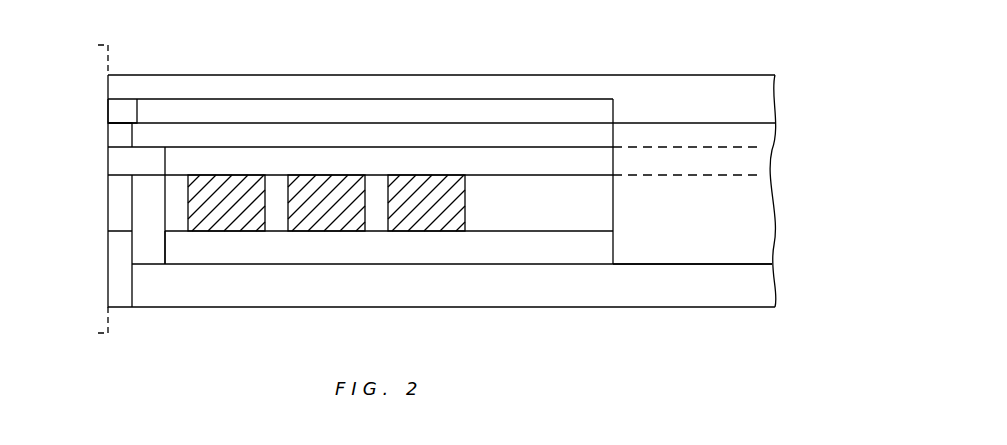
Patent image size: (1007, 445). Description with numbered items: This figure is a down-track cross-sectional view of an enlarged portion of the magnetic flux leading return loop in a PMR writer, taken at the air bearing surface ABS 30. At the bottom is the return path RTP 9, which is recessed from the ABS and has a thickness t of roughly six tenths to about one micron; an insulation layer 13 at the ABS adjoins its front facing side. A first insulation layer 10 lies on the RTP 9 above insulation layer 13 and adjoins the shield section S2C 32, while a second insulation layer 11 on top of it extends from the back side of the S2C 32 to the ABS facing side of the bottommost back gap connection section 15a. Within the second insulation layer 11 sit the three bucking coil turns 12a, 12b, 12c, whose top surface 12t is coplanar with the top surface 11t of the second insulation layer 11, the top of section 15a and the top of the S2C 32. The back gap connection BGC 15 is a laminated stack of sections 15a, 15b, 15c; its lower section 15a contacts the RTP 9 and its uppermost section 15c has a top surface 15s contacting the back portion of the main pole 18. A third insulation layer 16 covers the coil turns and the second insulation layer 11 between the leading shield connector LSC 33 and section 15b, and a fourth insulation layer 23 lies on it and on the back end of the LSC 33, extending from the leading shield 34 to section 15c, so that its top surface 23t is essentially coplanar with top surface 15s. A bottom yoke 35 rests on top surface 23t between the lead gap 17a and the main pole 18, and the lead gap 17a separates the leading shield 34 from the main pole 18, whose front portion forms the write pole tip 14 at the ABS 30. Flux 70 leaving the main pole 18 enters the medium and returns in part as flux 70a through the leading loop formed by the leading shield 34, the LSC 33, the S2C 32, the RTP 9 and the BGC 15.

The return path (RTP) 9 is at (764, 287).
The first insulation layer 10 is at (118, 246).
The second insulation layer 11 is at (120, 202).
The top surface of second insulation layer 11t is at (490, 176).
The bucking coil turn 12a is at (205, 220).
The bucking coil turn 12b is at (305, 222).
The bucking coil turn 12c is at (438, 218).
The bucking coil layer top surface 12t is at (437, 176).
The insulation layer 13 is at (118, 287).
The write pole tip 14 is at (108, 86).
The back gap connection (BGC) 15 is at (838, 125).
The bottommost BGC section 15a is at (762, 249).
The middle BGC section 15b is at (762, 165).
The uppermost BGC section 15c is at (762, 136).
The top surface of BGC 15s is at (672, 122).
The third insulation layer 16 is at (528, 162).
The lead gap 17a is at (118, 110).
The main pole 18 is at (333, 92).
The fourth insulation layer 23 is at (562, 137).
The top surface of fourth insulation layer 23t is at (283, 122).
The ABS 30 is at (88, 193).
The shield section (S2C) 32 is at (145, 185).
The leading shield connector (LSC) 33 is at (120, 160).
The leading shield 34 is at (126, 137).
The bottom yoke 35 is at (386, 112).
The flux 70 is at (186, 95).
The return flux pathway 70a is at (92, 143).
The RTP thickness t is at (568, 264).